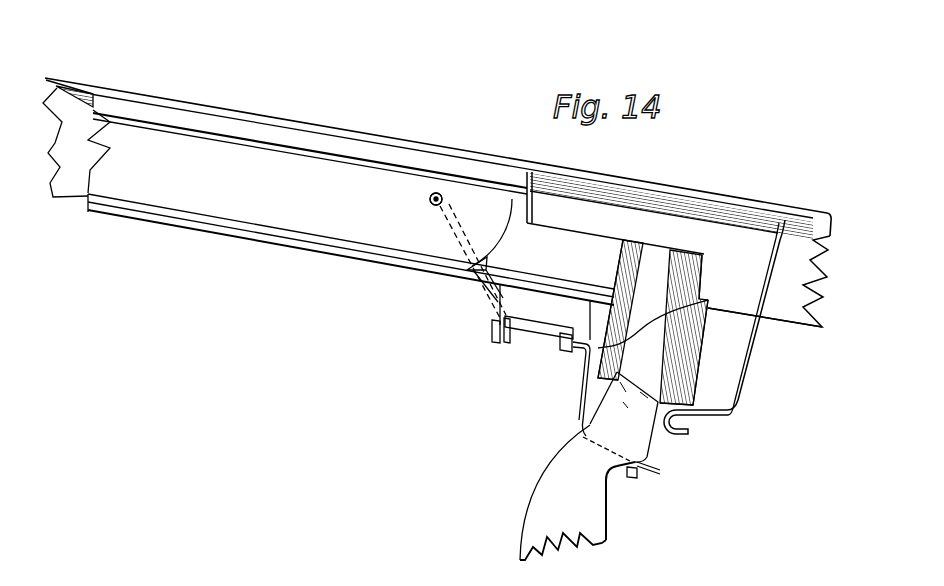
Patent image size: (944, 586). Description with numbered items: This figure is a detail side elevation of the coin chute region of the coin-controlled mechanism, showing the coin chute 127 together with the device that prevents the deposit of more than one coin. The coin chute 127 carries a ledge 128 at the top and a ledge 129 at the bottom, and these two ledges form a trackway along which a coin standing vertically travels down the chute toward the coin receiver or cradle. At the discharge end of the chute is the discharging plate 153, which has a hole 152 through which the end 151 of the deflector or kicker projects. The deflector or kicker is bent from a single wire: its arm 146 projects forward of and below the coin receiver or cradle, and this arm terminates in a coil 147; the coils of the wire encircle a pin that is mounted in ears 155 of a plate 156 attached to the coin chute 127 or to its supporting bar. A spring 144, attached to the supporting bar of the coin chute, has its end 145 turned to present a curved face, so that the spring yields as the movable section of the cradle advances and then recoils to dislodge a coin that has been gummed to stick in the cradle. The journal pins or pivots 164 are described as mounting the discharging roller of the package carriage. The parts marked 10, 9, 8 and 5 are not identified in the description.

The coin chute 127 is at (437, 202).
The ledge 128 is at (155, 125).
The ledge 129 is at (130, 210).
The end 151 is at (429, 200).
The hole 152 is at (455, 201).
The discharging plate 153 is at (476, 258).
The post 10 is at (617, 288).
The post section 9 is at (710, 352).
The cross member 8 is at (624, 417).
The plate 156 is at (545, 312).
The ears 155 is at (503, 344).
The journal pins or pivots 164 is at (538, 340).
The coil 147 is at (570, 348).
The spring 144 is at (732, 317).
The end 145 is at (681, 422).
The arm 146 is at (631, 488).
The panel 5 is at (563, 492).